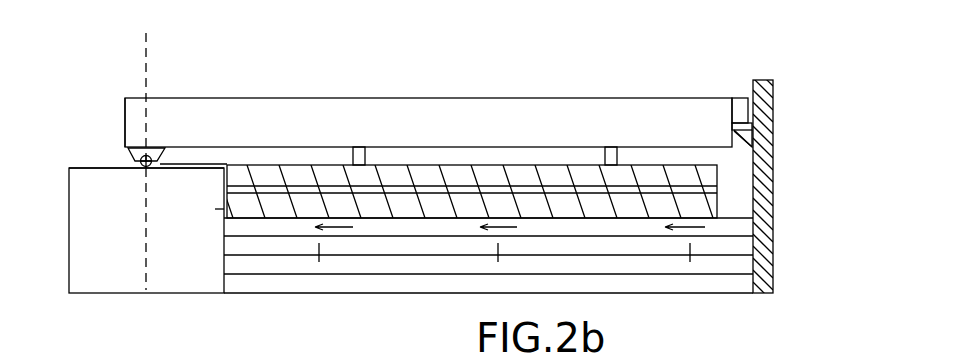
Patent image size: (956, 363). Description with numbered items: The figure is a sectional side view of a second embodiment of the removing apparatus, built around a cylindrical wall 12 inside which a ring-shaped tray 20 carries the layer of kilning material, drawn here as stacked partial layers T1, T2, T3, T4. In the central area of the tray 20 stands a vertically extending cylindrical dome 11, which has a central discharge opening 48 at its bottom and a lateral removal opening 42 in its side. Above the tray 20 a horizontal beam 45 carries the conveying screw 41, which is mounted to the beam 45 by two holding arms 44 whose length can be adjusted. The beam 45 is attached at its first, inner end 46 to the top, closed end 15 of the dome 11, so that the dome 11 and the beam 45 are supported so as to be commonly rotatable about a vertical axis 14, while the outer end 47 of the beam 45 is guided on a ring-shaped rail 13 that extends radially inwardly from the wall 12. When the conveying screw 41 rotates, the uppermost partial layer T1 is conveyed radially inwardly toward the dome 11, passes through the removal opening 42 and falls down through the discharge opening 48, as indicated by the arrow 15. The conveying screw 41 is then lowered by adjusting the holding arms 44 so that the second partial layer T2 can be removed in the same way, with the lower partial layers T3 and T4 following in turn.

The cylindrical dome 11 is at (100, 168).
The cylindrical wall 12 is at (764, 80).
The ring-shaped rail 13 is at (748, 135).
The vertical axis 14 is at (145, 50).
The closed end 15 is at (117, 168).
The ring-shaped tray 20 is at (519, 283).
The conveying screw 41 is at (467, 170).
The lateral removal opening 42 is at (218, 210).
The holding arms 44 is at (353, 156).
The beam 45 is at (283, 108).
The first, inner end 46 is at (165, 112).
The outer end 47 is at (717, 113).
The central discharge opening 48 is at (118, 278).
The uppermost partial layer T1 is at (752, 228).
The second partial layer T2 is at (752, 248).
The layer T3 is at (752, 265).
The layer T4 is at (752, 283).